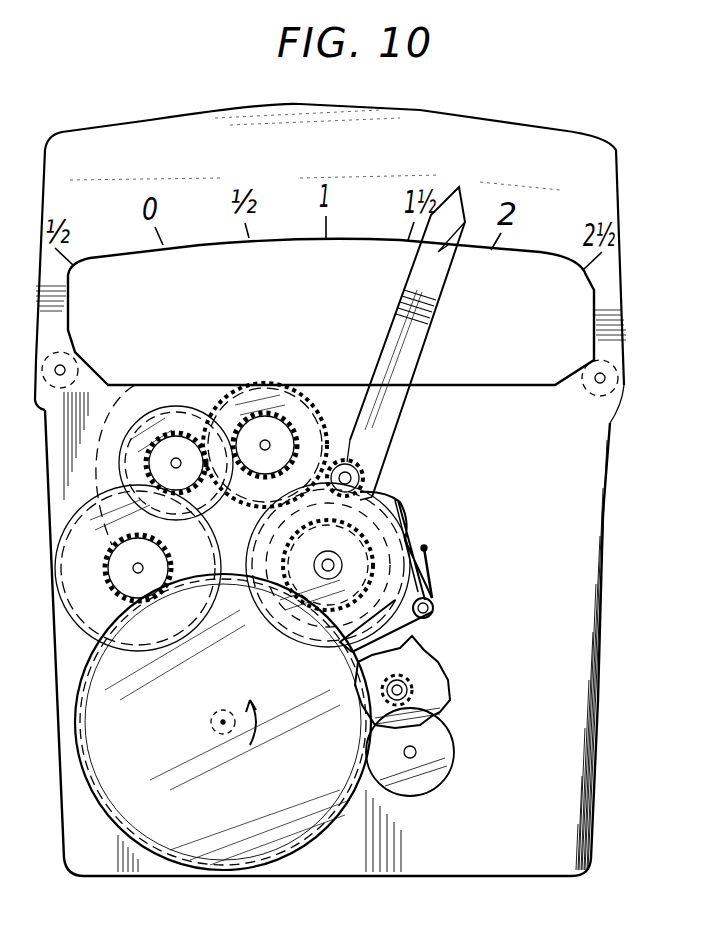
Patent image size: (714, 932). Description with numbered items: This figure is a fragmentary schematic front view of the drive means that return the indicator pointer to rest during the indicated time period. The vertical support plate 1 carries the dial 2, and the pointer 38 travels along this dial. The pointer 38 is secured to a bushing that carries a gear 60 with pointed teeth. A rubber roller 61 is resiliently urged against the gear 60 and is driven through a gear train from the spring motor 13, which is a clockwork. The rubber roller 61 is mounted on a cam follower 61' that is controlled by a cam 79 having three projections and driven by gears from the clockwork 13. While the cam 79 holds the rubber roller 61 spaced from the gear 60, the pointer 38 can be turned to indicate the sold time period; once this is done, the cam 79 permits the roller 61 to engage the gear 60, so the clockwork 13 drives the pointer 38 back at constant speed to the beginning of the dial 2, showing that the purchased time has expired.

The support plate 1 is at (598, 530).
The dial 2 is at (607, 188).
The spring motor 13 is at (216, 846).
The pointer 38 is at (422, 316).
The rubber roller 61 is at (387, 556).
The gear 60 is at (427, 550).
The cam follower 61' is at (437, 556).
The cam 79 is at (426, 668).